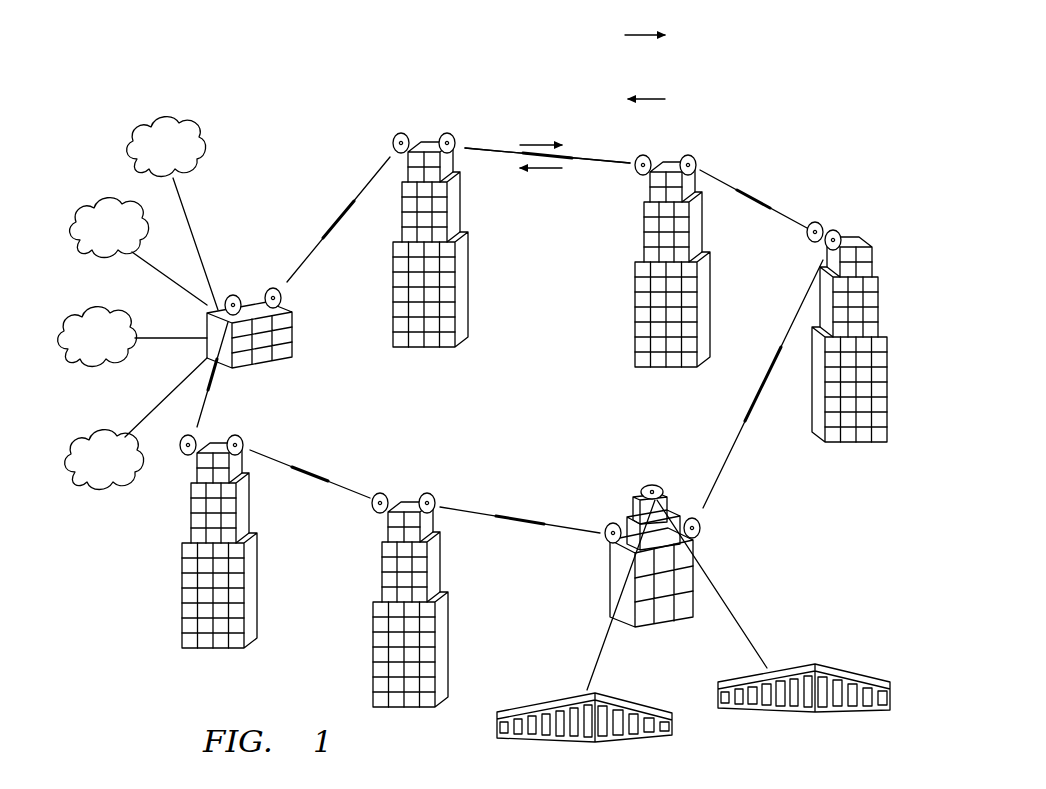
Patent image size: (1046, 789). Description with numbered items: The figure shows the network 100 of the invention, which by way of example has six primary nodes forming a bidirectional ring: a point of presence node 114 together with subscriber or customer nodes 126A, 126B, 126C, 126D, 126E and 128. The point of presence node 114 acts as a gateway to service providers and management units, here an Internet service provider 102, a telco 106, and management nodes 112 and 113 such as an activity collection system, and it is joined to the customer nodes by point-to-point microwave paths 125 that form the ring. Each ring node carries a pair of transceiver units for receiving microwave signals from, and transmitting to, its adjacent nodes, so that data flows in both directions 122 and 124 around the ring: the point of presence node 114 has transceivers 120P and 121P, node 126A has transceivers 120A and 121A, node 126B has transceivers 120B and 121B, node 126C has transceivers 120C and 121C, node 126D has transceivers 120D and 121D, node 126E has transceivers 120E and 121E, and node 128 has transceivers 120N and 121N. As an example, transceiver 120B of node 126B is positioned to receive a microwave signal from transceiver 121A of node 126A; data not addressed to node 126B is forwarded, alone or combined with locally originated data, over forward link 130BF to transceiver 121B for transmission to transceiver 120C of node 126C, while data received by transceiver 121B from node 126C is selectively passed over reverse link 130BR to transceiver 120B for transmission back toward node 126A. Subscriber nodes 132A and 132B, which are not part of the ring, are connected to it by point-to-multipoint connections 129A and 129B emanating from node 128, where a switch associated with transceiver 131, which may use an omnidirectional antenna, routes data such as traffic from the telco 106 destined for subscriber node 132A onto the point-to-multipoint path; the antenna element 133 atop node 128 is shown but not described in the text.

The network 100 is at (840, 55).
The Internet service provider 102 is at (186, 159).
The telco 106 is at (129, 240).
The management node 112 is at (117, 349).
The management node 113 is at (124, 472).
The point of presence node 114 is at (295, 338).
The transceiver unit 120P is at (232, 293).
The transceiver unit 121P is at (272, 287).
The transceiver unit 120A is at (396, 134).
The transceiver unit 121A is at (470, 115).
The data flow direction 122 is at (534, 140).
The data flow direction 124 is at (532, 172).
The point-to-point microwave path 125 is at (585, 165).
The subscriber node 126A is at (470, 290).
The forward link 130BF is at (647, 51).
The reverse link 130BR is at (663, 138).
The transceiver unit 120B is at (640, 155).
The transceiver unit 121B is at (712, 135).
The subscriber node 126B is at (672, 370).
The transceiver unit 120C is at (812, 222).
The transceiver unit 121C is at (858, 211).
The subscriber node 126C is at (860, 445).
The transceiver unit 120E is at (185, 457).
The transceiver unit 121E is at (240, 434).
The subscriber node 126E is at (205, 650).
The transceiver unit 120D is at (372, 512).
The transceiver unit 121D is at (432, 492).
The subscriber node 126D is at (398, 710).
The transceiver 131 is at (637, 475).
The antenna 133 is at (660, 484).
The transceiver unit 120N is at (605, 522).
The transceiver unit 121N is at (703, 532).
The subscriber node 128 is at (665, 628).
The point-to-multipoint connection 129A is at (598, 645).
The point-to-multipoint connection 129B is at (745, 630).
The subscriber node 132A is at (548, 702).
The subscriber node 132B is at (835, 713).